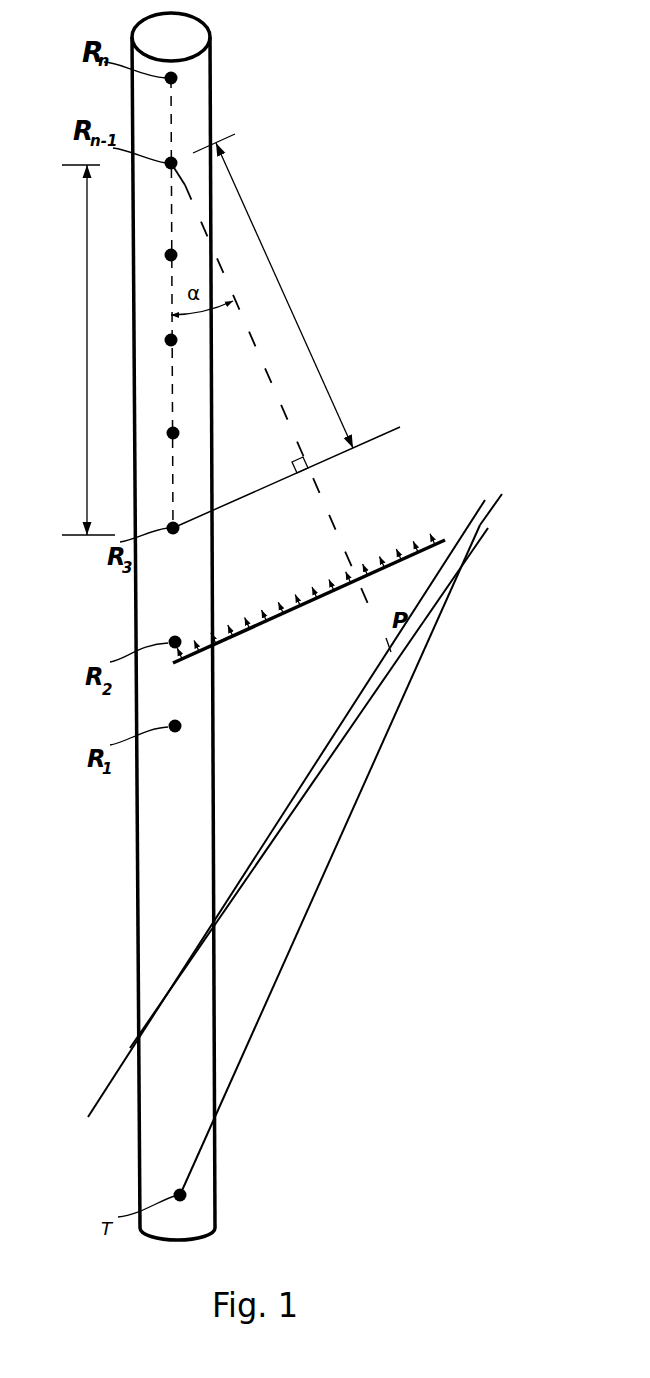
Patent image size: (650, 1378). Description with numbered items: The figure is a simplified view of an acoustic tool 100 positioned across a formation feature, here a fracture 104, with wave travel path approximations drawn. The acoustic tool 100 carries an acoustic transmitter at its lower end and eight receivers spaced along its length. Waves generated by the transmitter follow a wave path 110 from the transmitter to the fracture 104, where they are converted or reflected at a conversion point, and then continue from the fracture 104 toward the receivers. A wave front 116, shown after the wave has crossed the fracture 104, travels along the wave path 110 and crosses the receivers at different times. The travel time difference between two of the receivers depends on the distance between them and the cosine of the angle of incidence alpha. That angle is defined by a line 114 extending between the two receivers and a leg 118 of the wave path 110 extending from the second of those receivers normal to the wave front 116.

The acoustic tool 100 is at (212, 52).
The fracture 104 is at (120, 1058).
The wave path 110 is at (372, 614).
The line 114 is at (88, 350).
The wave front 116 is at (308, 607).
The leg 118 is at (273, 291).